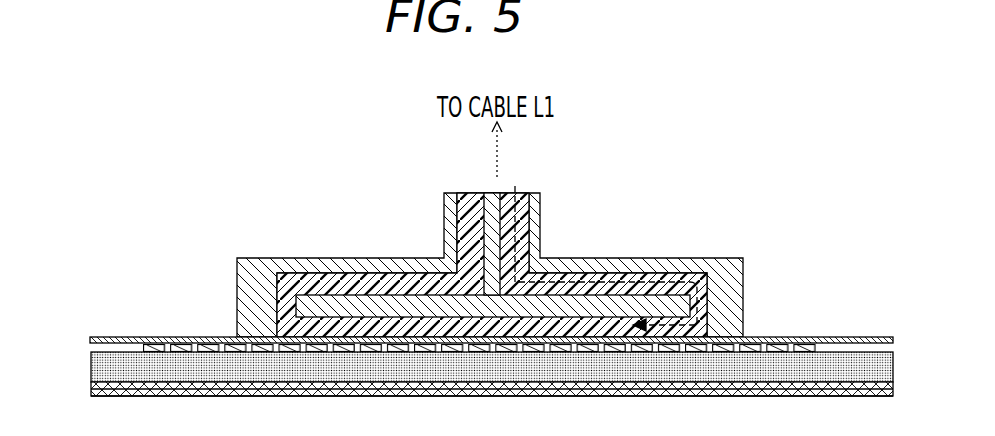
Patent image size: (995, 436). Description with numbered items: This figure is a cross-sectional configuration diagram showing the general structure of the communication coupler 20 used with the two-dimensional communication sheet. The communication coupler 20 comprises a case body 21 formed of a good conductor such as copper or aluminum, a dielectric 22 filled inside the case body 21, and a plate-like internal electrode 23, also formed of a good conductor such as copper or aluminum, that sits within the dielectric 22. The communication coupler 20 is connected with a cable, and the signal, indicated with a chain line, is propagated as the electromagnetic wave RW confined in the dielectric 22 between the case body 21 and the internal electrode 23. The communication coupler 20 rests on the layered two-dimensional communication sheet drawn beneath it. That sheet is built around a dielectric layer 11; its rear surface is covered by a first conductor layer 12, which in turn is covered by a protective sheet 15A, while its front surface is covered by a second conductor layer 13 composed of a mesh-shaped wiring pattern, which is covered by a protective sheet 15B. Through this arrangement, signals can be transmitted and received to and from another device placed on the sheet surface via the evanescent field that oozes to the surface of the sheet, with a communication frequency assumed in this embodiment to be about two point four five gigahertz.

The communication coupler 20 is at (230, 112).
The case body 21 is at (392, 262).
The dielectric 22 is at (308, 278).
The internal electrode 23 is at (492, 192).
The electromagnetic wave RW is at (517, 217).
The second conductor layer 13 is at (189, 338).
The protective sheet 15B is at (90, 339).
The dielectric layer 11 is at (90, 365).
The first conductor layer 12 is at (90, 385).
The protective sheet 15A is at (91, 397).